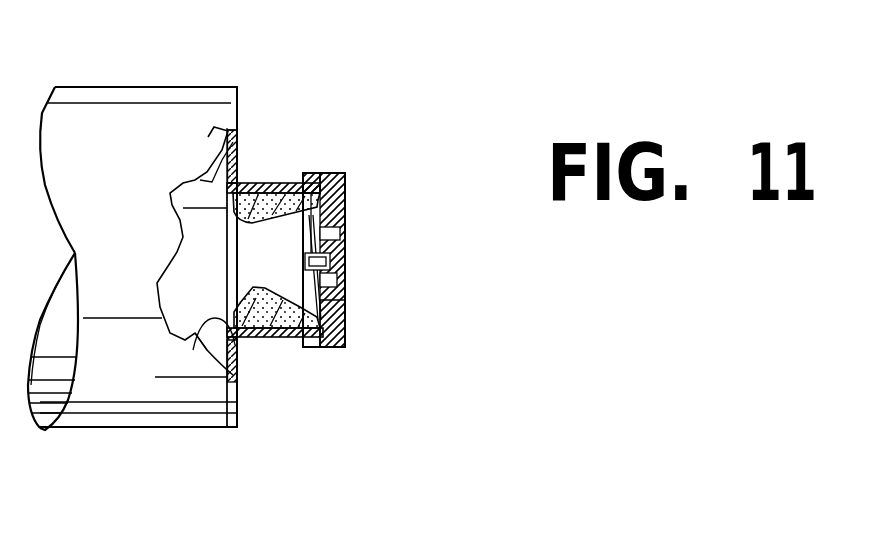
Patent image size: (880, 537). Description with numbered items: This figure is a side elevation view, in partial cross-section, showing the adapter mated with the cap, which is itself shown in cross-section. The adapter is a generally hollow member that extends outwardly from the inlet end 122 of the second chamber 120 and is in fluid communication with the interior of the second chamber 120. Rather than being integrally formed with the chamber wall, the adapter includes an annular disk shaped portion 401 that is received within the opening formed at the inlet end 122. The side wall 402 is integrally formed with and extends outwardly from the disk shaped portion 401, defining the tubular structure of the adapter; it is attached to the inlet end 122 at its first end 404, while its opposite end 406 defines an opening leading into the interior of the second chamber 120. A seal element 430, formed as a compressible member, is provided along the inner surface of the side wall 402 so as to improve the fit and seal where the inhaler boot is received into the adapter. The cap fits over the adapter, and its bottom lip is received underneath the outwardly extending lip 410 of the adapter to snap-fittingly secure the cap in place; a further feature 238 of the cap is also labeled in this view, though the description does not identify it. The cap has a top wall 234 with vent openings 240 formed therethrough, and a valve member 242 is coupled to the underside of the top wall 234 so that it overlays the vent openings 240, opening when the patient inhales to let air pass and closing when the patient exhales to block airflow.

The second chamber 120 is at (103, 112).
The inlet end 122 is at (228, 362).
The top wall 234 is at (347, 210).
The housing base 238 is at (308, 330).
The vent opening 240 is at (347, 247).
The valve member 242 is at (305, 248).
The annular disk shaped portion 401 is at (200, 330).
The side wall 402 is at (267, 184).
The first end 404 is at (228, 215).
The opposite end 406 is at (347, 322).
The outwardly extending lip 410 is at (322, 175).
The seal element 430 is at (277, 330).